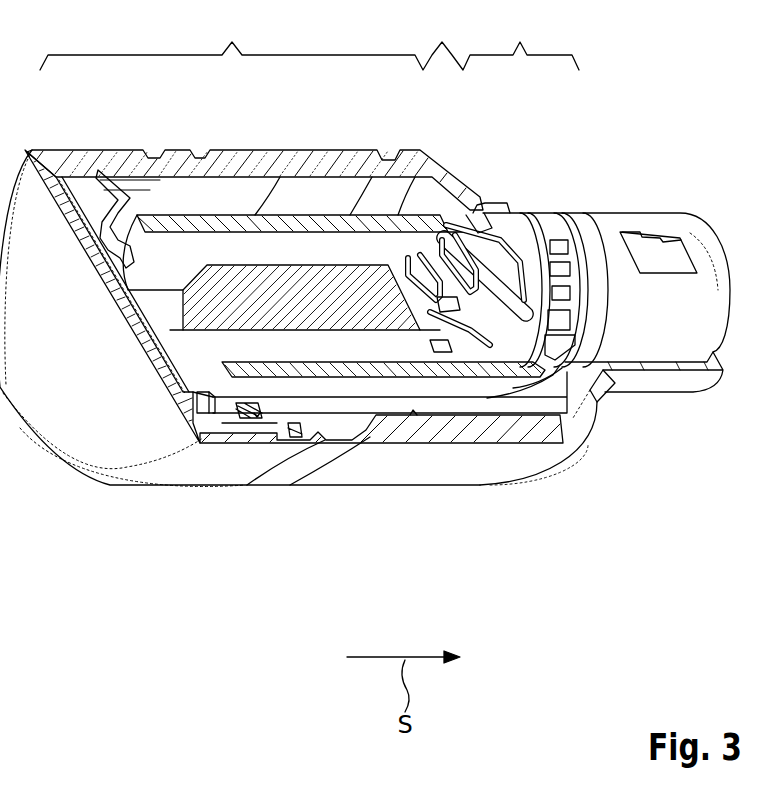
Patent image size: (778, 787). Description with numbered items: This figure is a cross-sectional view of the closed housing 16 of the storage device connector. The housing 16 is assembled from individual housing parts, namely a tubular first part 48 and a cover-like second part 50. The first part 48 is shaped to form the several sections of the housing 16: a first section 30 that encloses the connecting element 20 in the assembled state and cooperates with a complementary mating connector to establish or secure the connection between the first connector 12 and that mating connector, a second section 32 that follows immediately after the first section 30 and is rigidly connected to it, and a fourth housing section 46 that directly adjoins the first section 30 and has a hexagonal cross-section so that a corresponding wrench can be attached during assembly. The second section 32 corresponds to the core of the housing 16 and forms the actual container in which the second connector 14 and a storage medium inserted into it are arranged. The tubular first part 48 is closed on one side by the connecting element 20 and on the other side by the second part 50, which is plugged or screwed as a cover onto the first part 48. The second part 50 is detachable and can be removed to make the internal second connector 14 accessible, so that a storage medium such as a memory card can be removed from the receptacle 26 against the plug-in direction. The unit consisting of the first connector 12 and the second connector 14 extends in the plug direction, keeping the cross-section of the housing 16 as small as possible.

The first connector 12 is at (583, 298).
The second connector 14 is at (272, 293).
The housing 16 is at (327, 505).
The connecting element 20 is at (610, 228).
The receptacle 26 is at (207, 412).
The first section 30 is at (533, 186).
The second section 32 is at (231, 80).
The fourth housing section 46 is at (491, 189).
The first part 48 is at (408, 429).
The second part 50 is at (122, 472).